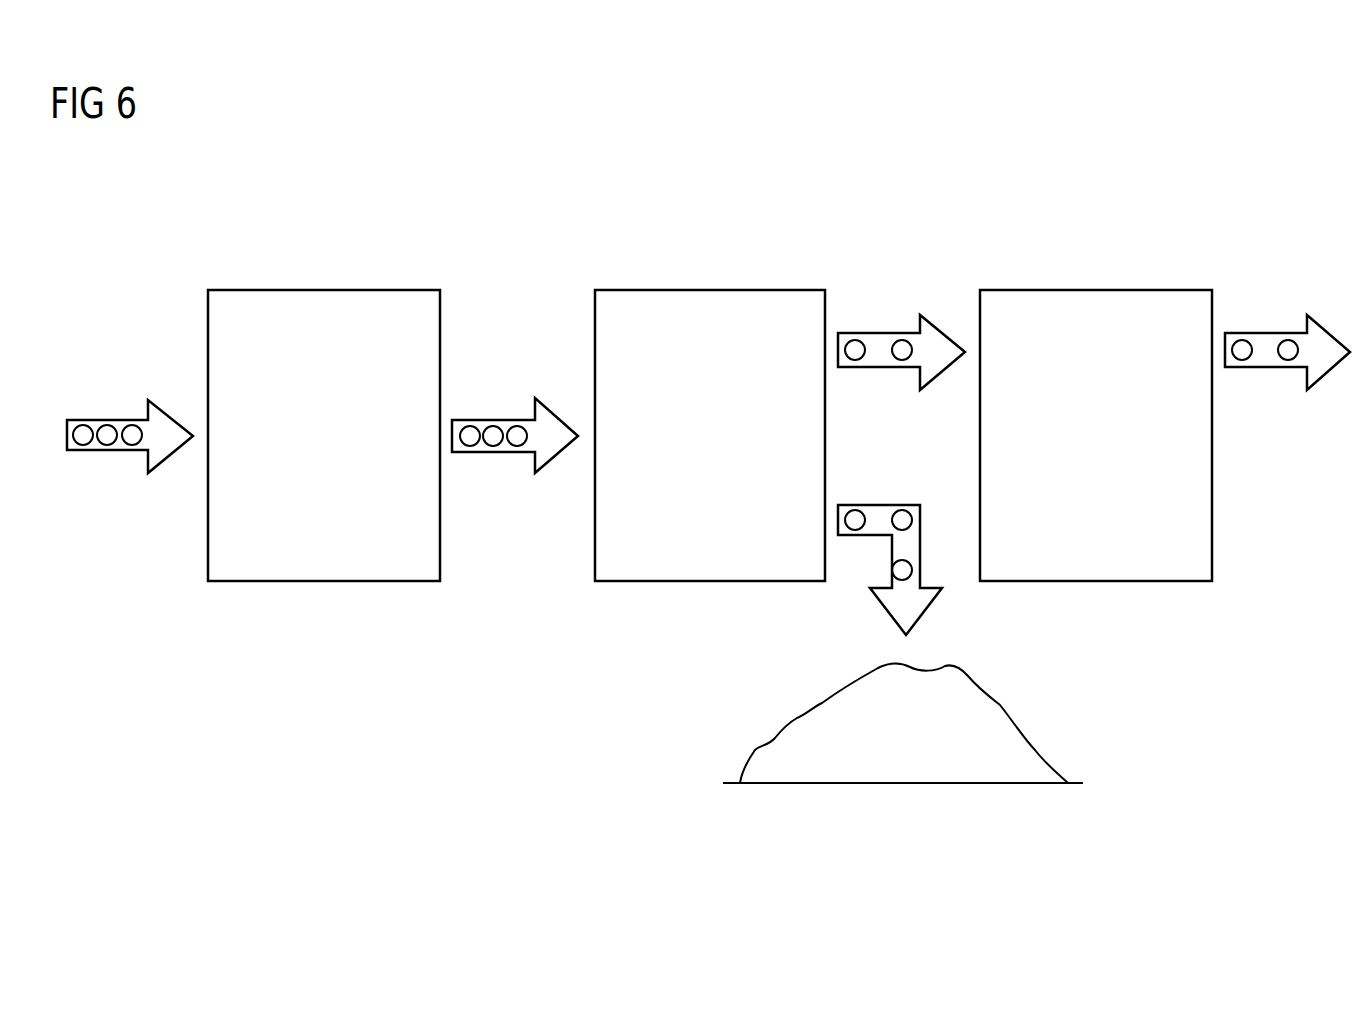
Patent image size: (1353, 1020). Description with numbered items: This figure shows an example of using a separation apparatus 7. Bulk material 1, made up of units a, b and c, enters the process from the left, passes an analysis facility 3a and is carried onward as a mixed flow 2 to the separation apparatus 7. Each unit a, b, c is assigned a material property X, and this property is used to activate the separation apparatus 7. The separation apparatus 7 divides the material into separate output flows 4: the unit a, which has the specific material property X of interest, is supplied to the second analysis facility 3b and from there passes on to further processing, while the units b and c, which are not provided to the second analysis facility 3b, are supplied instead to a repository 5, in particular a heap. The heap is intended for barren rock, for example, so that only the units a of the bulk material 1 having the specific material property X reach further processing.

The bulk material 1 is at (110, 420).
The first separation device 3a is at (327, 290).
The second analysis facility 3b is at (1100, 290).
The separation apparatus 7 is at (708, 290).
The repository 5 is at (972, 692).
The unit of bulk material a is at (83, 447).
The intermediate stream 2 is at (515, 435).
The output streams 4 is at (1094, 475).